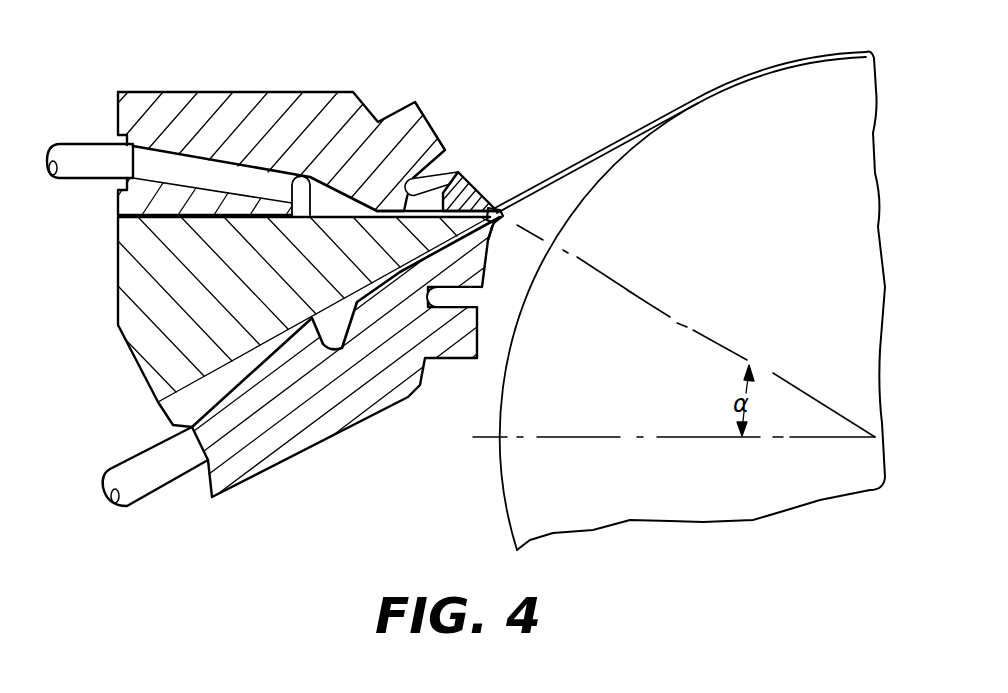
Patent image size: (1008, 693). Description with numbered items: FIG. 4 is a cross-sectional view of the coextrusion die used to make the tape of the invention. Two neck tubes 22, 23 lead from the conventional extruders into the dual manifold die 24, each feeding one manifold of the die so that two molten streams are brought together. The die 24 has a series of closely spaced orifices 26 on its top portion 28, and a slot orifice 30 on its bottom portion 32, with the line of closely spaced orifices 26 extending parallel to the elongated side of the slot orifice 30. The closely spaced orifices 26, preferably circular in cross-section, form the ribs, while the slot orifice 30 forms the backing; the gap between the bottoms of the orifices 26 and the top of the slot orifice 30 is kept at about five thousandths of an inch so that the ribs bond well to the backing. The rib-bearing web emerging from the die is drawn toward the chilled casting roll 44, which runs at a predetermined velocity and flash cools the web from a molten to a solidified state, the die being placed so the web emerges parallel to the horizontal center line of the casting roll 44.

The neck tube 22 is at (80, 173).
The neck tube 23 is at (148, 483).
The dual manifold die 24 is at (279, 92).
The closely spaced orifices 26 is at (500, 207).
The top portion 28 is at (482, 197).
The slot orifice 30 is at (510, 219).
The bottom portion 32 is at (497, 225).
The casting roll 44 is at (802, 86).